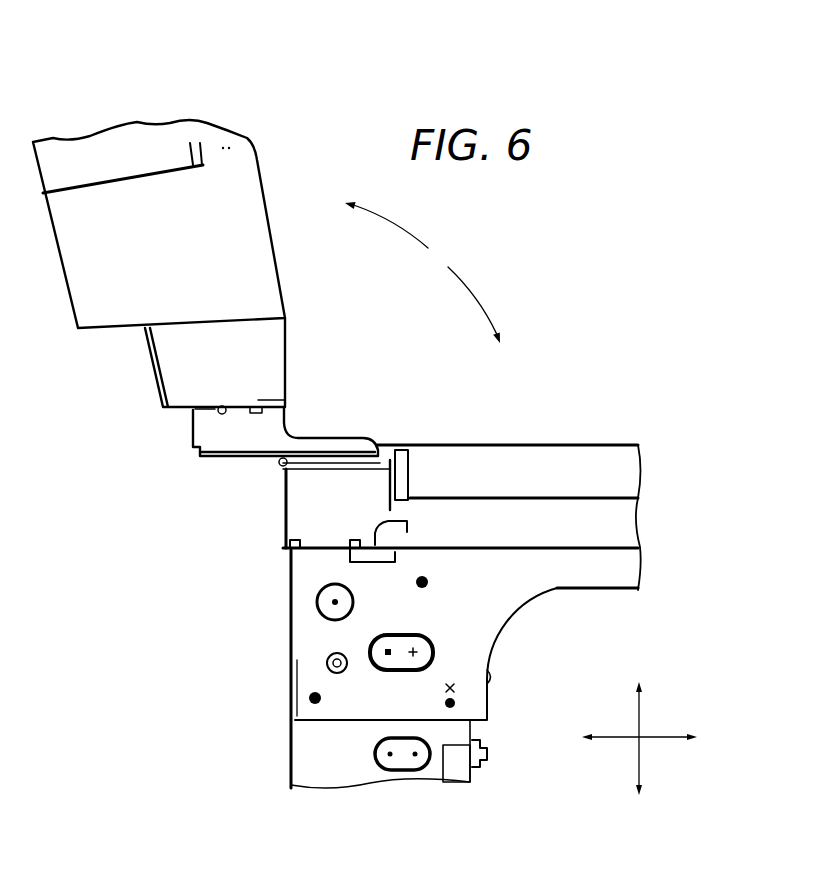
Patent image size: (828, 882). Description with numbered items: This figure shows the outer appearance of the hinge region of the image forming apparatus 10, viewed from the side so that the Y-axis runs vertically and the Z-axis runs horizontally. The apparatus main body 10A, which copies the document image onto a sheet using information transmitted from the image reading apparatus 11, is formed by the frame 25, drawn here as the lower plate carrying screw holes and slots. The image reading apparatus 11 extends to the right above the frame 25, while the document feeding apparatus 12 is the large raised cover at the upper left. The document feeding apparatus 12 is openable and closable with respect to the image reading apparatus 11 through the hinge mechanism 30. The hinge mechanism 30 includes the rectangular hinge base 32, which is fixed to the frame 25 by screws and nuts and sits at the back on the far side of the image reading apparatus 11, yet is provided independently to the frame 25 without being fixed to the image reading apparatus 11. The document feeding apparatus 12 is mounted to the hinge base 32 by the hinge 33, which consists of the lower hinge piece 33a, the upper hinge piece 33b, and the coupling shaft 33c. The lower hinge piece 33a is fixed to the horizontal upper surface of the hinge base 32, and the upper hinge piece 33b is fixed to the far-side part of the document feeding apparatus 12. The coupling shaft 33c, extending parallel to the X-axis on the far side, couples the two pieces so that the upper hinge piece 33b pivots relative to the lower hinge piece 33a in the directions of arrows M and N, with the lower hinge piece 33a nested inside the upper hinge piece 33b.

The image forming apparatus 10 is at (242, 83).
The apparatus main body 10A is at (272, 652).
The image reading apparatus 11 is at (653, 471).
The document feeding apparatus 12 is at (278, 164).
The frame 25 is at (305, 682).
The hinge mechanism 30 is at (221, 570).
The hinge base 32 is at (307, 522).
The hinge 33 is at (78, 360).
The lower hinge piece 33a is at (203, 433).
The upper hinge piece 33b is at (177, 369).
The coupling shaft 33c is at (220, 414).